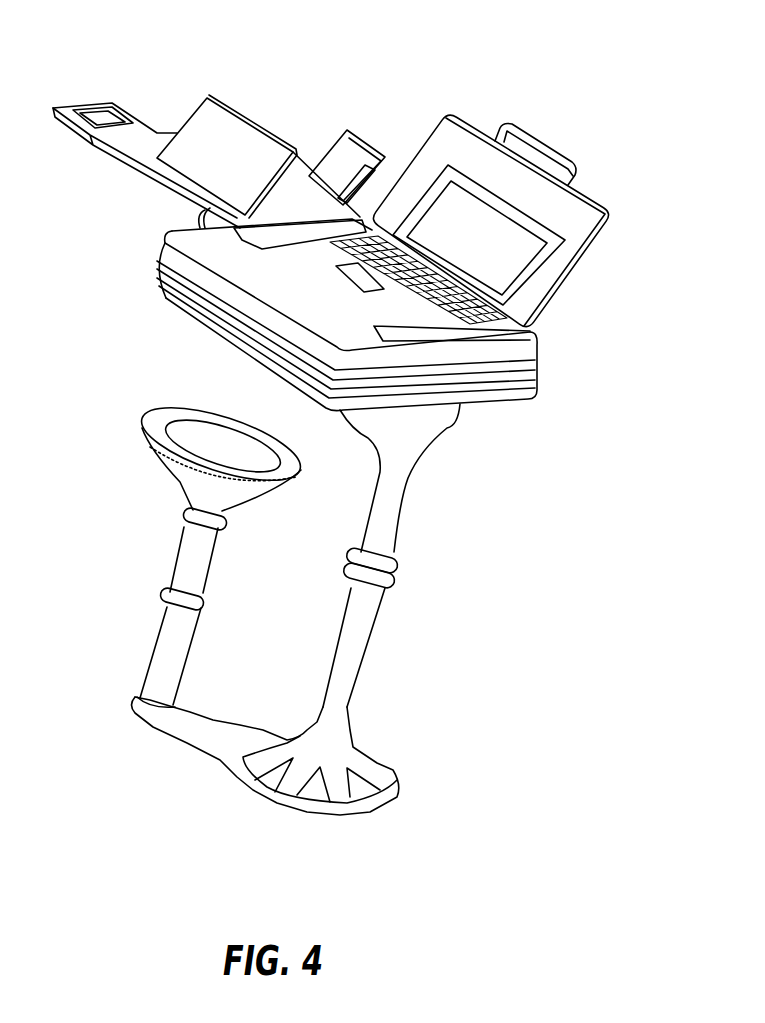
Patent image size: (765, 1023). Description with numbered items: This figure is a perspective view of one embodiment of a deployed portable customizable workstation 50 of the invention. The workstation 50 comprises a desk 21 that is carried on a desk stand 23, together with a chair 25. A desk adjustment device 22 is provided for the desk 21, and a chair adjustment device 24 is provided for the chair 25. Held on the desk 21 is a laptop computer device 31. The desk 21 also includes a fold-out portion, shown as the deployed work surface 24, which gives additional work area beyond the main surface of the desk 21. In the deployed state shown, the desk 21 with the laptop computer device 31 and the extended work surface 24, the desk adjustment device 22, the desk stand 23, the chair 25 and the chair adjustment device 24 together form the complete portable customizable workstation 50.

The desk 21 is at (527, 390).
The desk adjustment device 22 is at (405, 563).
The desk stand 23 is at (390, 765).
The chair adjustment device 24 is at (160, 131).
The chair 25 is at (148, 412).
The laptop computer device 31 is at (540, 266).
The portable customizable workstation 50 is at (466, 112).